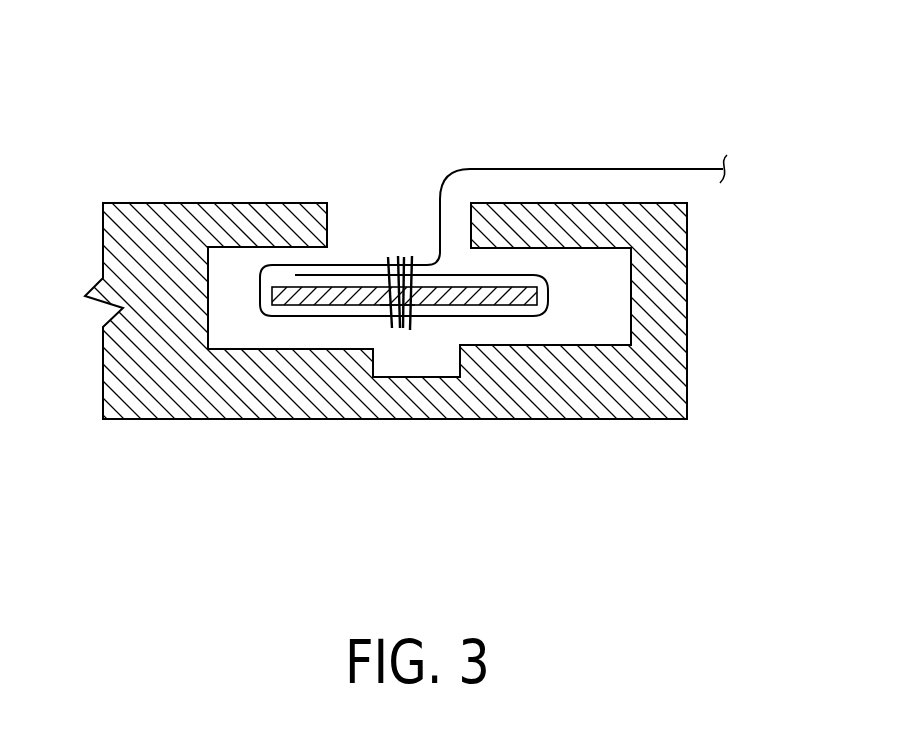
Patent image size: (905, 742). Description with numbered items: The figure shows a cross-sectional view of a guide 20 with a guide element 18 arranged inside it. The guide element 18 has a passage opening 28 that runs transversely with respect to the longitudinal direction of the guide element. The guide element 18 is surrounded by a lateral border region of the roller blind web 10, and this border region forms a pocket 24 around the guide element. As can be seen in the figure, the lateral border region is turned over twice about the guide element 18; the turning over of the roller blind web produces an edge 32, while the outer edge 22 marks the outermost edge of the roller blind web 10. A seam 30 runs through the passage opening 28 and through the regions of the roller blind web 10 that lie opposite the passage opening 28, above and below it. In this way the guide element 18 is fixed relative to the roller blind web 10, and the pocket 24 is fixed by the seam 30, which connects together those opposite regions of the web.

The roller blind web 10 is at (557, 168).
The guide element 18 is at (330, 290).
The guide 20 is at (588, 419).
The outer edge 22 is at (281, 250).
The pocket 24 is at (252, 313).
The passage opening 28 is at (397, 293).
The seam 30 is at (393, 242).
The edge 32 is at (566, 321).